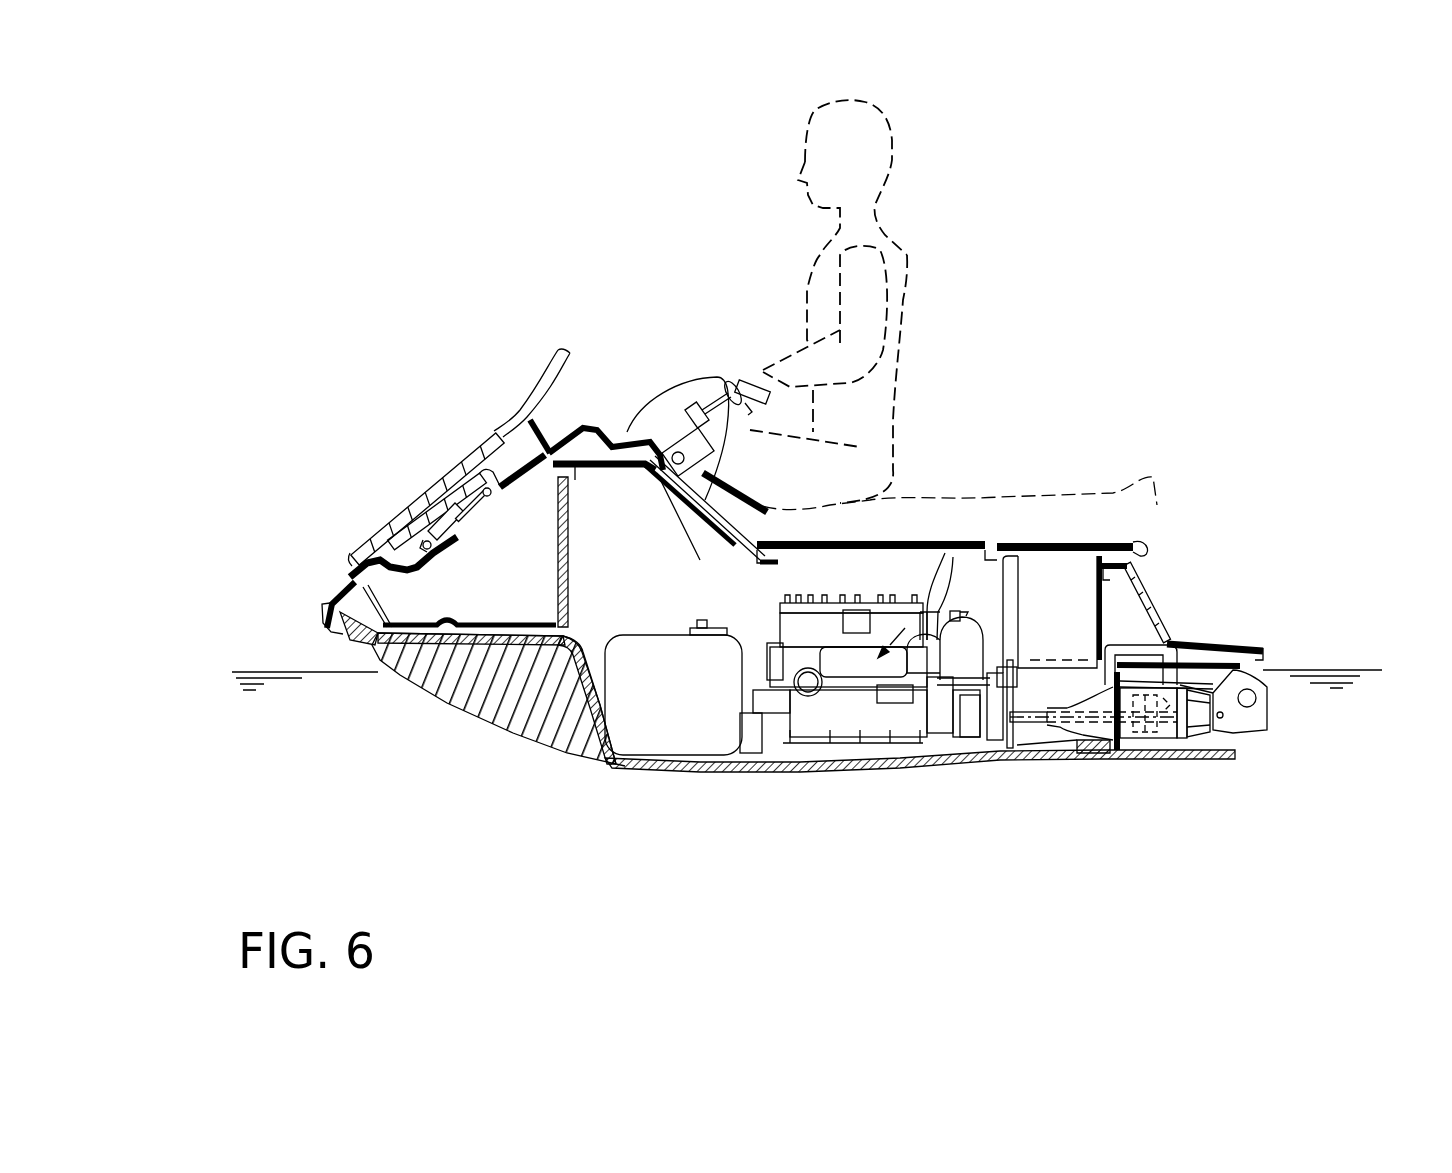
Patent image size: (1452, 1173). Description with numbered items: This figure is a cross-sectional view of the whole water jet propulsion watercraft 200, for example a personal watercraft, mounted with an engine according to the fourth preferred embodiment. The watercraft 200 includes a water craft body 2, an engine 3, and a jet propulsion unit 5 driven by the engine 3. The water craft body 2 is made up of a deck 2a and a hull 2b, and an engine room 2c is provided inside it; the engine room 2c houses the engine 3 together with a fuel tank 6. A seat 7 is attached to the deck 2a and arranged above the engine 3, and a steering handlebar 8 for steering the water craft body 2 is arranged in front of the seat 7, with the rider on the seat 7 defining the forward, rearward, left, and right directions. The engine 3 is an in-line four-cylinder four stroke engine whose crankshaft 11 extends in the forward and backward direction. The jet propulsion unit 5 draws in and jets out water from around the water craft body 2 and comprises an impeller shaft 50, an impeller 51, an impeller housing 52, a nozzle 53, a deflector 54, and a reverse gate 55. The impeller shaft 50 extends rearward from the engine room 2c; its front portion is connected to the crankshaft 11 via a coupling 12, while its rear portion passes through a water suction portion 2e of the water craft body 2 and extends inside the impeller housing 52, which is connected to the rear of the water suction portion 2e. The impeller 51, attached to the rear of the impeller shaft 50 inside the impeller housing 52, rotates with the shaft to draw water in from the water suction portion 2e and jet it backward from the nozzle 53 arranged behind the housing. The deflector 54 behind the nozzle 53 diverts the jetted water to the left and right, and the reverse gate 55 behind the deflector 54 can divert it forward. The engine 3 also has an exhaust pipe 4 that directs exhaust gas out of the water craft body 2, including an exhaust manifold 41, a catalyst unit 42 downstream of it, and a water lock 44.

The water craft body 2 is at (407, 724).
The deck 2a is at (355, 583).
The hull 2b is at (487, 737).
The engine room 2c is at (685, 545).
The water suction portion 2e is at (1078, 762).
The engine 3 is at (823, 713).
The exhaust pipe 4 is at (995, 663).
The exhaust manifold 41 is at (951, 610).
The catalyst unit 42 is at (968, 606).
The water lock 44 is at (1088, 665).
The jet propulsion unit 5 is at (1157, 743).
The impeller shaft 50 is at (1090, 727).
The impeller 51 is at (1140, 747).
The impeller housing 52 is at (1170, 733).
The nozzle 53 is at (1190, 743).
The deflector 54 is at (1217, 737).
The reverse gate 55 is at (1240, 680).
The fuel tank 6 is at (675, 727).
The seat 7 is at (973, 470).
The handlebar 8 is at (738, 378).
The crankshaft 11 is at (967, 690).
The coupling 12 is at (983, 690).
The water jet propulsion watercraft 200 is at (1013, 220).